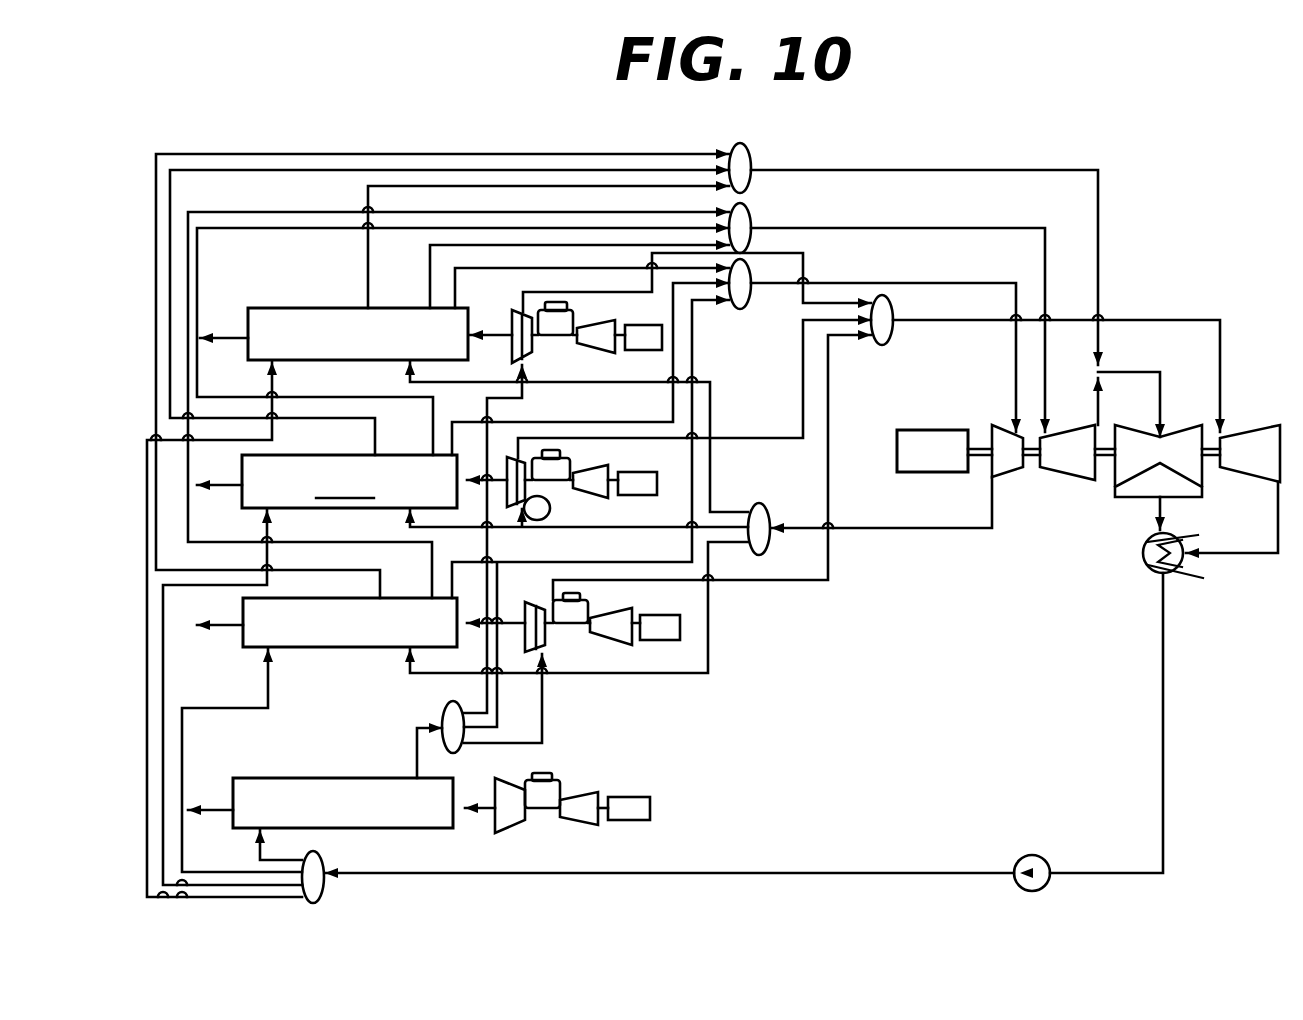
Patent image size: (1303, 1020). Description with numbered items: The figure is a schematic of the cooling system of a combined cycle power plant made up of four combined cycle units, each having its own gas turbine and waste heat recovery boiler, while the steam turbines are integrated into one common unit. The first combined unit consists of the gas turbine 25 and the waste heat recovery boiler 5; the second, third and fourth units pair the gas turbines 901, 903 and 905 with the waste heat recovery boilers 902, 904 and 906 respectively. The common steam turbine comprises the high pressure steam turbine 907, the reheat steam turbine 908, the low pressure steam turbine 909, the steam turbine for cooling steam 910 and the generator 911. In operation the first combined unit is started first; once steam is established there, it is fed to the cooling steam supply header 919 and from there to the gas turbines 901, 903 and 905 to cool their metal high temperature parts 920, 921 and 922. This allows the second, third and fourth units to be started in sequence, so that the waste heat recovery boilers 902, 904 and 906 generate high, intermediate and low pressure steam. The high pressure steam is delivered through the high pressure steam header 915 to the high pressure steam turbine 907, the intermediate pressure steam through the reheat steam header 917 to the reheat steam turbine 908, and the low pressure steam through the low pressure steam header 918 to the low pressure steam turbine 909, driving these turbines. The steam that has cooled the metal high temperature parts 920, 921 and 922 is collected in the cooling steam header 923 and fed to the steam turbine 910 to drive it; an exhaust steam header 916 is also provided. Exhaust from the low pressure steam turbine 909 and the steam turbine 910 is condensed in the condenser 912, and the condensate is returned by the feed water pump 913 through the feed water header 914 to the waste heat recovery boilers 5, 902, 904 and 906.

The waste heat recovery boiler 5 is at (267, 800).
The gas turbine 25 is at (580, 788).
The gas turbine 901 is at (519, 335).
The waste heat recovery boiler 902 is at (303, 323).
The gas turbine 903 is at (567, 465).
The waste heat recovery boiler 904 is at (349, 481).
The gas turbine 905 is at (612, 656).
The waste heat recovery boiler 906 is at (370, 630).
The high pressure steam turbine 907 is at (1005, 440).
The reheat steam turbine 908 is at (1070, 462).
The low pressure steam turbine 909 is at (1178, 442).
The steam turbine for cooling steam 910 is at (1262, 440).
The generator 911 is at (913, 440).
The condenser 912 is at (1143, 557).
The feed water pump 913 is at (1015, 878).
The feed water header 914 is at (318, 893).
The high pressure steam header 915 is at (752, 300).
The exhaust steam header 916 is at (763, 504).
The reheat steam header 917 is at (750, 208).
The low pressure steam header 918 is at (745, 148).
The cooling steam supply header 919 is at (444, 713).
The metal high temperature parts 920 is at (512, 318).
The metal high temperature parts 921 is at (542, 519).
The metal high temperature parts 922 is at (553, 640).
The cooling steam header 923 is at (893, 308).